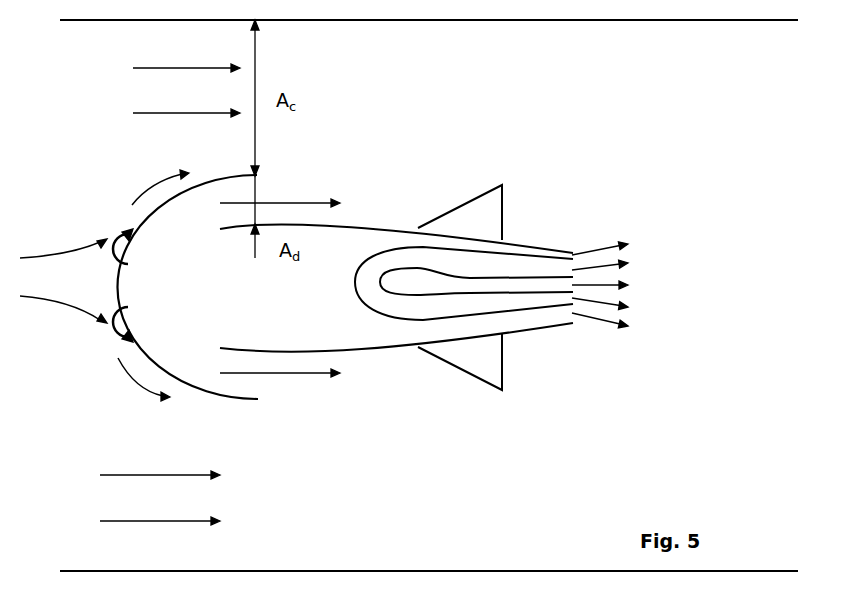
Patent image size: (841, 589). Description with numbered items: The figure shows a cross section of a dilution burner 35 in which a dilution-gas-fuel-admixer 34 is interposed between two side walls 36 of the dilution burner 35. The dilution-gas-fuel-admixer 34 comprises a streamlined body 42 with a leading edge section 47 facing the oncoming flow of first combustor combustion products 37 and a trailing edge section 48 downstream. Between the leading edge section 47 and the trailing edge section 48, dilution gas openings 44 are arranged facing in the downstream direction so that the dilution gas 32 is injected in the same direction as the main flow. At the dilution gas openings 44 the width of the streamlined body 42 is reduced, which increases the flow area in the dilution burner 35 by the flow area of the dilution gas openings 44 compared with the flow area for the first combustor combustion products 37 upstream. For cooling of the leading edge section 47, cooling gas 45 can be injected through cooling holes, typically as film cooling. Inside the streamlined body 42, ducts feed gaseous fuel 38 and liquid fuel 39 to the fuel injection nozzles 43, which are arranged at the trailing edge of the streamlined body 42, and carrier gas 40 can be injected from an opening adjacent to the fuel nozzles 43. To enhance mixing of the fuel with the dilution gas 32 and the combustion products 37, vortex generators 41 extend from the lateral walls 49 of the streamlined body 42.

The dilution gas 32 is at (285, 291).
The dilution-gas-fuel-admixer 34 is at (343, 168).
The dilution burner 35 is at (522, 57).
The side walls 36 is at (668, 20).
The first combustor combustion products 37 is at (169, 294).
The gaseous fuel 38 is at (615, 286).
The liquid fuel 39 is at (615, 287).
The carrier gas 40 is at (615, 286).
The vortex generators 41 is at (483, 362).
The streamlined body 42 is at (205, 291).
The fuel injection nozzles 43 is at (568, 270).
The dilution gas openings 44 is at (238, 382).
The cooling gas 45 is at (110, 320).
The leading edge section 47 is at (145, 360).
The trailing edge section 48 is at (570, 313).
The lateral walls 49 is at (383, 228).